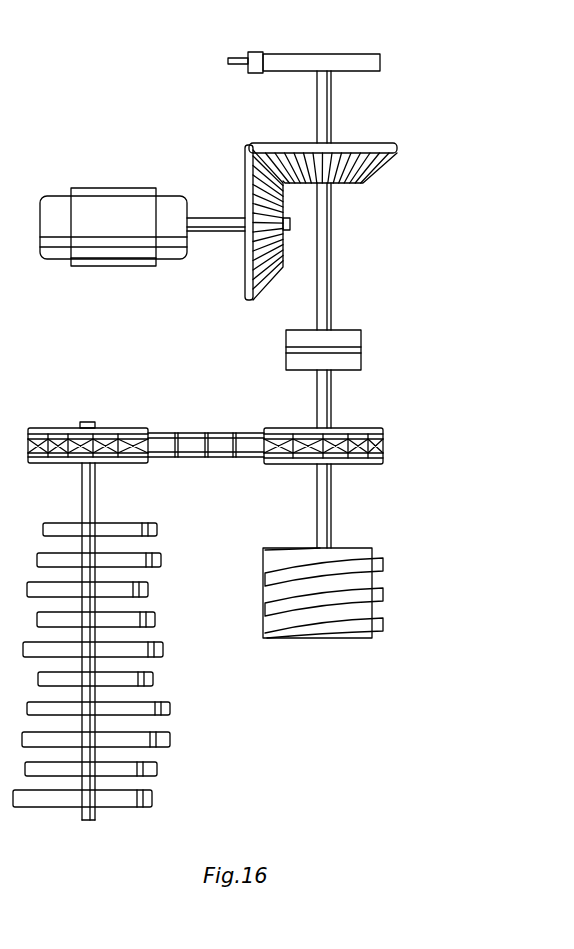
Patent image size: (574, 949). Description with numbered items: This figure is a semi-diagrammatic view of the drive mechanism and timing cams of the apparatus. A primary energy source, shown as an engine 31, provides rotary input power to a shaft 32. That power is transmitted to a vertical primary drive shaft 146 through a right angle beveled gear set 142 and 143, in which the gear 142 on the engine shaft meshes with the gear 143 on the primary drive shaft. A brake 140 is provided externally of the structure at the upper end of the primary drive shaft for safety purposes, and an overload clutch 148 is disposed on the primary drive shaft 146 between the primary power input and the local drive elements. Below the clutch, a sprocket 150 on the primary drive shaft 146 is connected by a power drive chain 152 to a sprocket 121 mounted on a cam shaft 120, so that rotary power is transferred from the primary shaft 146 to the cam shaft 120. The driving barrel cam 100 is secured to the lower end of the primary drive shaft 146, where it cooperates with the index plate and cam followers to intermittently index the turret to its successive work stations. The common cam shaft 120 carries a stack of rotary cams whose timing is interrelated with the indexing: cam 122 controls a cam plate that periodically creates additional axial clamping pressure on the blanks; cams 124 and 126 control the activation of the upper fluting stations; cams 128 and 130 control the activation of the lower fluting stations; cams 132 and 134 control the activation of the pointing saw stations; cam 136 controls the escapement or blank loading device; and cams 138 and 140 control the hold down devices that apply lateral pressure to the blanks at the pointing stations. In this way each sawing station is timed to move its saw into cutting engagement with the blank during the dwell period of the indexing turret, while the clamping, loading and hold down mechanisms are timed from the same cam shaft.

The engine 31 is at (108, 200).
The shaft 32 is at (212, 217).
The driving barrel cam 100 is at (345, 640).
The cam shaft 120 is at (96, 490).
The sprocket 121 is at (46, 428).
The cam 122 is at (152, 522).
The cam 124 is at (155, 553).
The cam 126 is at (143, 583).
The cam 128 is at (150, 612).
The cam 130 is at (163, 648).
The cam 132 is at (153, 678).
The cam 134 is at (170, 708).
The cam 136 is at (163, 747).
The cam 138 is at (150, 776).
The brake / cam 140 is at (345, 53).
The beveled gear 142 is at (245, 172).
The beveled gear 143 is at (363, 143).
The primary drive shaft 146 is at (331, 255).
The overload clutch 148 is at (355, 330).
The sprocket 150 is at (358, 428).
The power drive chain 152 is at (212, 433).